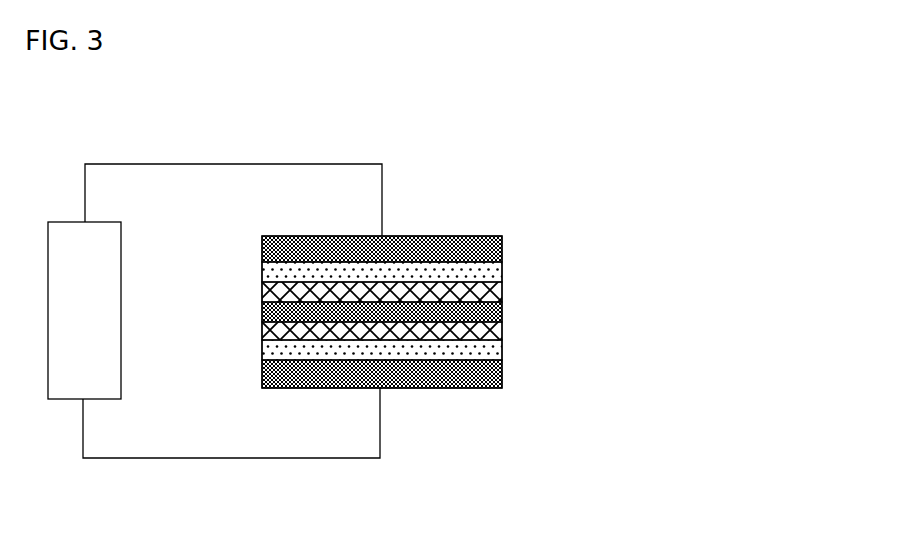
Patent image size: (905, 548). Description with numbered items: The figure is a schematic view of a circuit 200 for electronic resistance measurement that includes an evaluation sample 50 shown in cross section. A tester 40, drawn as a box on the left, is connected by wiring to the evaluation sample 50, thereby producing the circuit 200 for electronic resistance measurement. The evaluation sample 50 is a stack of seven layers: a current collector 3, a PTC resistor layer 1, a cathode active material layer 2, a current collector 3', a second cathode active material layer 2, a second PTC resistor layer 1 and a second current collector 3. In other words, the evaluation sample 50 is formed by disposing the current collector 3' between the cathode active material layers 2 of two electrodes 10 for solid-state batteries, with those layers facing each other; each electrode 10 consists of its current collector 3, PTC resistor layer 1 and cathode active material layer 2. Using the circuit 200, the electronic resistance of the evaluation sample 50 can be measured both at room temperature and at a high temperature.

The circuit for electronic resistance measurement 200 is at (226, 144).
The evaluation sample 50 is at (415, 277).
The tester 40 is at (121, 311).
The electrode for solid-state batteries 10 is at (572, 217).
The current collector 3 is at (412, 309).
The PTC resistor layer 1 is at (502, 270).
The cathode active material layer 2 is at (502, 291).
The current collector 3' is at (415, 312).